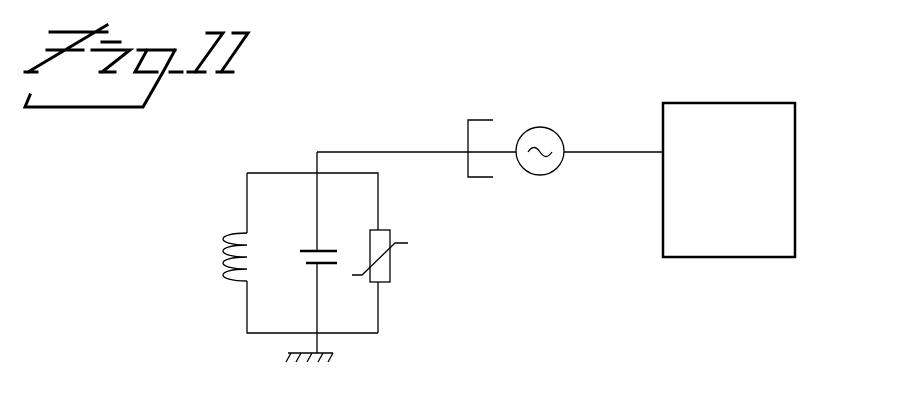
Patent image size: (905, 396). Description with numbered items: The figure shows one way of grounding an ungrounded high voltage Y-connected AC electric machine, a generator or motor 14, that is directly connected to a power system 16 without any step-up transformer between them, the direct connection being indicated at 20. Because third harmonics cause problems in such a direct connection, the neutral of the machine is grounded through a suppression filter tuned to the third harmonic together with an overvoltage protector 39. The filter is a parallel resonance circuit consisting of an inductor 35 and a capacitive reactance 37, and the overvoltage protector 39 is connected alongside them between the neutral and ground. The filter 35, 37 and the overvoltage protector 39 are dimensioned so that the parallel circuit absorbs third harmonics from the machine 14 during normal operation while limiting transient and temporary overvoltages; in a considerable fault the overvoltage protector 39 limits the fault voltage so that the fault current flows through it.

The generator or motor 14 is at (541, 142).
The power system 16 is at (779, 141).
The connector 20 is at (466, 149).
The inductor 35 is at (223, 277).
The capacitive reactance 37 is at (307, 263).
The overvoltage protector 39 is at (383, 268).